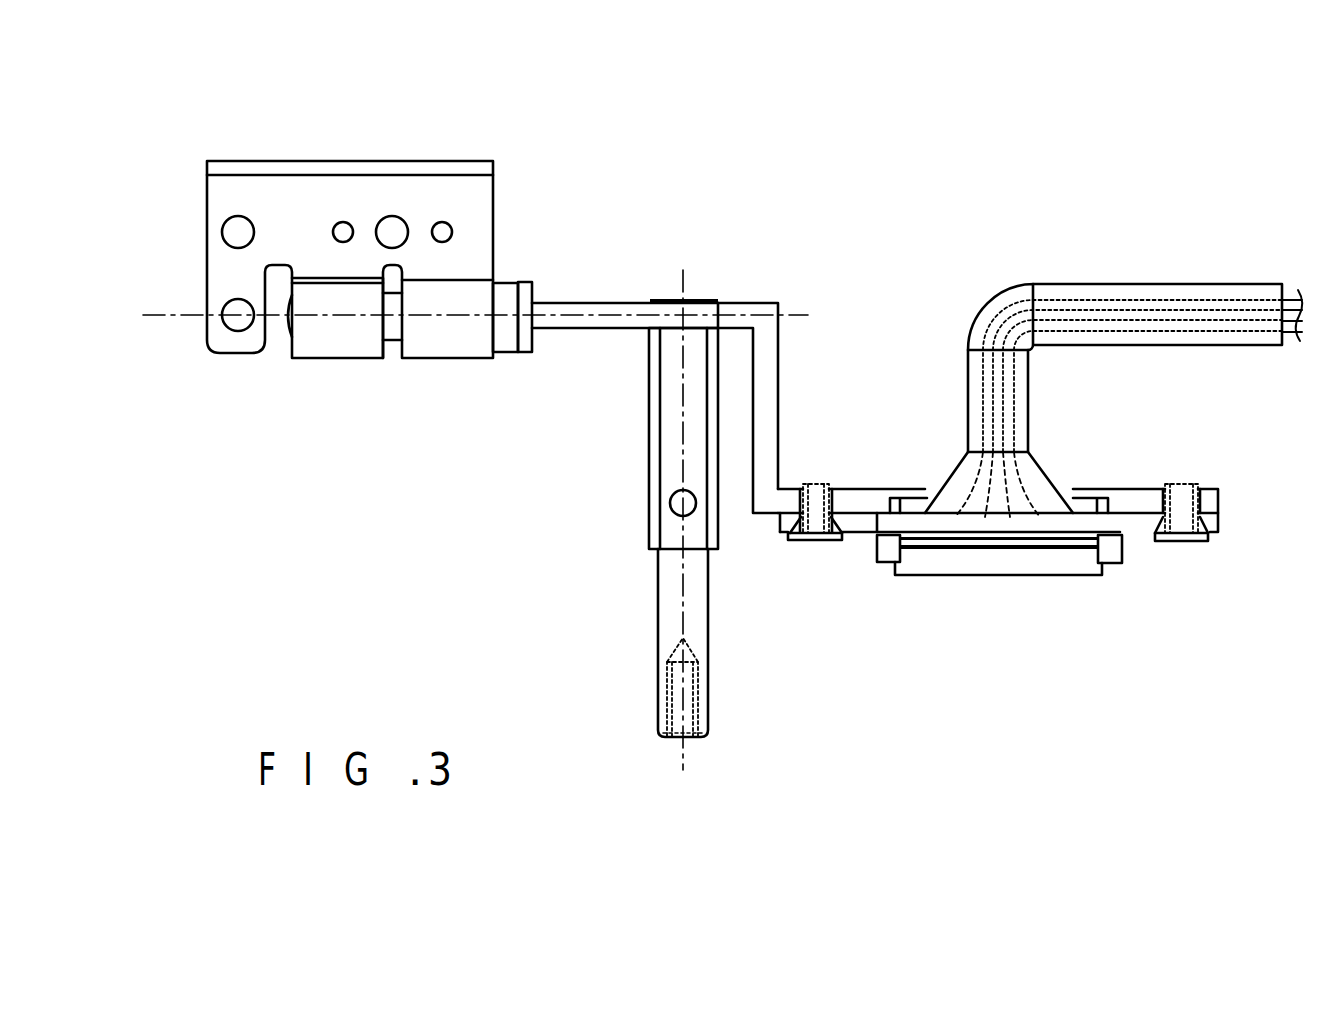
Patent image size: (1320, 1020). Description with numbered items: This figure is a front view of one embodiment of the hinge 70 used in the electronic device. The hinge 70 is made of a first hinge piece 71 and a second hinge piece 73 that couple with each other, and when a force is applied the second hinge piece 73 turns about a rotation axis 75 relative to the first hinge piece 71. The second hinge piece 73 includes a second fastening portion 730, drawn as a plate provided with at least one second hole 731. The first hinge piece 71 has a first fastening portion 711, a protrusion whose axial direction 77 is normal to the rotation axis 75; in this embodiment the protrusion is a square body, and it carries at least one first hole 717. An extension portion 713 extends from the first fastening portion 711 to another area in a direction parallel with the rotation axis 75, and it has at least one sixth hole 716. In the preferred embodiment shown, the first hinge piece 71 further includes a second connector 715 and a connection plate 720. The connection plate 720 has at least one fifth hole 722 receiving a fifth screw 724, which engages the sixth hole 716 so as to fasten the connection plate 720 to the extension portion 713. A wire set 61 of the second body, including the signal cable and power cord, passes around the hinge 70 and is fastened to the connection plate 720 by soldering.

The hinge 70 is at (147, 78).
The second hinge piece 73 is at (367, 213).
The second fastening portion 730 is at (310, 187).
The second hole 731 is at (237, 238).
The rotation axis 75 is at (165, 315).
The first hinge piece 71 is at (677, 232).
The first fastening portion 711 is at (670, 610).
The first hole 717 is at (675, 740).
The axial direction 77 is at (683, 758).
The extension portion 713 is at (890, 382).
The connection plate 720 is at (1210, 522).
The sixth hole 716 is at (802, 491).
The fifth hole 722 is at (791, 537).
The fifth screw 724 is at (818, 542).
The second connector 715 is at (1000, 566).
The wire set 61 is at (1138, 298).